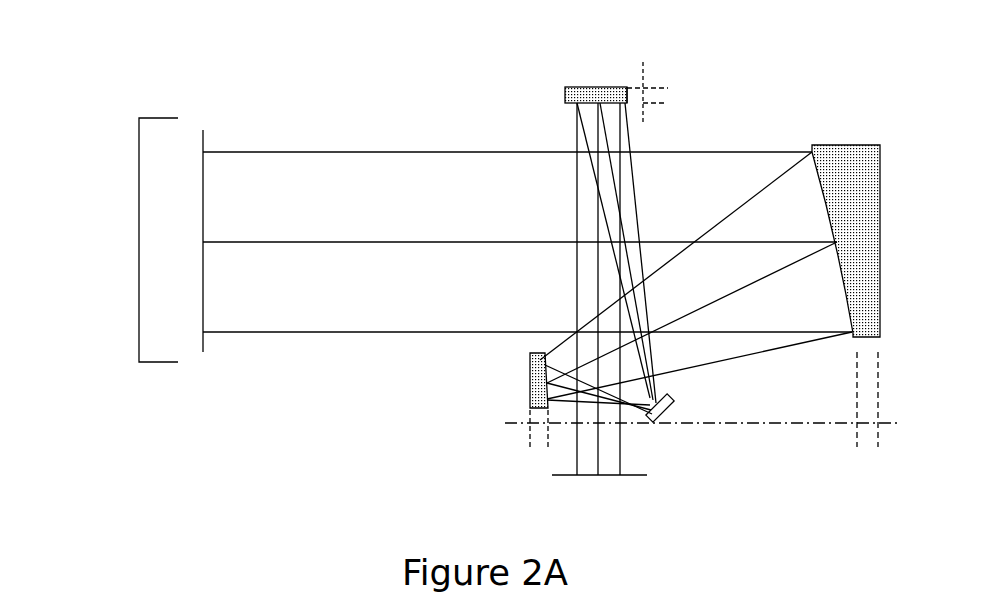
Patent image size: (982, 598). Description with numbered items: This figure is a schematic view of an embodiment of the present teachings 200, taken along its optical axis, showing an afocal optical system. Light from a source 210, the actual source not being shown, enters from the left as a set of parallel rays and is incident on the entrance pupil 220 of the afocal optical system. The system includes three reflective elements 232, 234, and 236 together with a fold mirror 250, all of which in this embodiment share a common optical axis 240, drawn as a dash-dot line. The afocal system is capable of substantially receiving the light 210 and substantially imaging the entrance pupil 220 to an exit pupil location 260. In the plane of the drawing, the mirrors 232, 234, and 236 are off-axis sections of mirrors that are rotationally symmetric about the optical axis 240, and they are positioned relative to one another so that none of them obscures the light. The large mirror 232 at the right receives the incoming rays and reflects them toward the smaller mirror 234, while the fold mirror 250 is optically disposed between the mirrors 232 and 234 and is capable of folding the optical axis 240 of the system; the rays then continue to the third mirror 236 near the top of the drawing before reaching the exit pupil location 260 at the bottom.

The embodiment of the present teachings 200 is at (114, 89).
The light from a source 210 is at (136, 242).
The entrance pupil 220 is at (203, 352).
The reflective element 232 is at (880, 190).
The reflective element 234 is at (530, 380).
The reflective element 236 is at (565, 101).
The optical axis 240 is at (812, 425).
The fold mirror 250 is at (668, 418).
The exit pupil location 260 is at (552, 478).